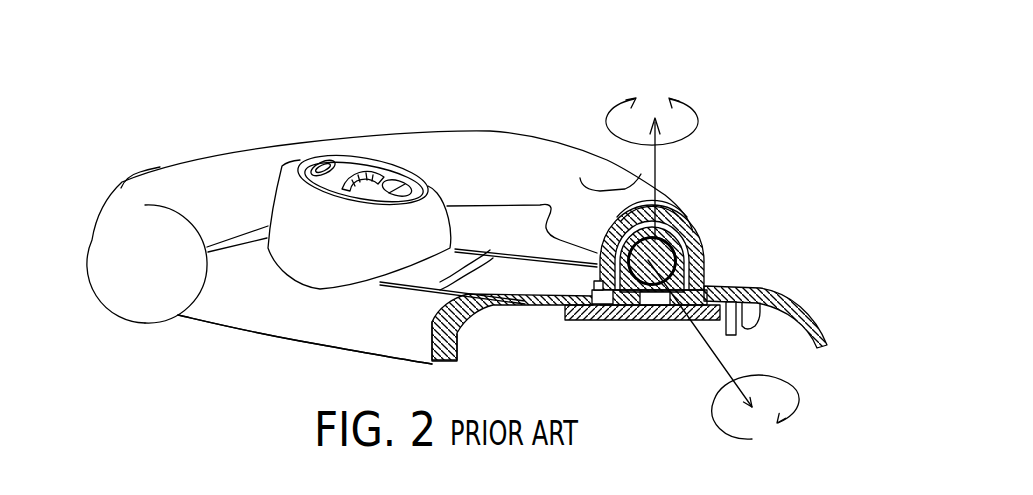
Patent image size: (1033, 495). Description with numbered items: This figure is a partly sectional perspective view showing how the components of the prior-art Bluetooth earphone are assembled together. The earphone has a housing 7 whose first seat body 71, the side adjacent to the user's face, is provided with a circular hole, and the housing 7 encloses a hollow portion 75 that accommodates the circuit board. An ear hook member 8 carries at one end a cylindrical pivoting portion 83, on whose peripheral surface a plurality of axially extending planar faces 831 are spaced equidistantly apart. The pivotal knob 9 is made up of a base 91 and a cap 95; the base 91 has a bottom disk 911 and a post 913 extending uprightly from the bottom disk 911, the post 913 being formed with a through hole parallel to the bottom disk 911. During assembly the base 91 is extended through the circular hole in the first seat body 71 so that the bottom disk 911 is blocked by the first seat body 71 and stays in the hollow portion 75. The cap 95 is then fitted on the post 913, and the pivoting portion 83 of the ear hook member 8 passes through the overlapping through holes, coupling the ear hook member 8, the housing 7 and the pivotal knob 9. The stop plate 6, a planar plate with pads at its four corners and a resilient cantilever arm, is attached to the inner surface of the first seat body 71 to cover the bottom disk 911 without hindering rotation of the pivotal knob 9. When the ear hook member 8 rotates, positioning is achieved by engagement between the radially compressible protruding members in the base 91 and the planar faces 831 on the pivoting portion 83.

The ear hook member 8 is at (319, 131).
The housing 7 is at (243, 338).
The first seat body 71 is at (307, 318).
The hollow portion 75 is at (500, 332).
The planar faces 831 is at (600, 279).
The cap 95 is at (612, 232).
The pivotal knob 9 is at (682, 268).
The post 913 is at (690, 272).
The stop plate 6 is at (628, 306).
The pivoting portion 83 is at (675, 251).
The base 91 is at (620, 308).
The bottom disk 911 is at (690, 305).